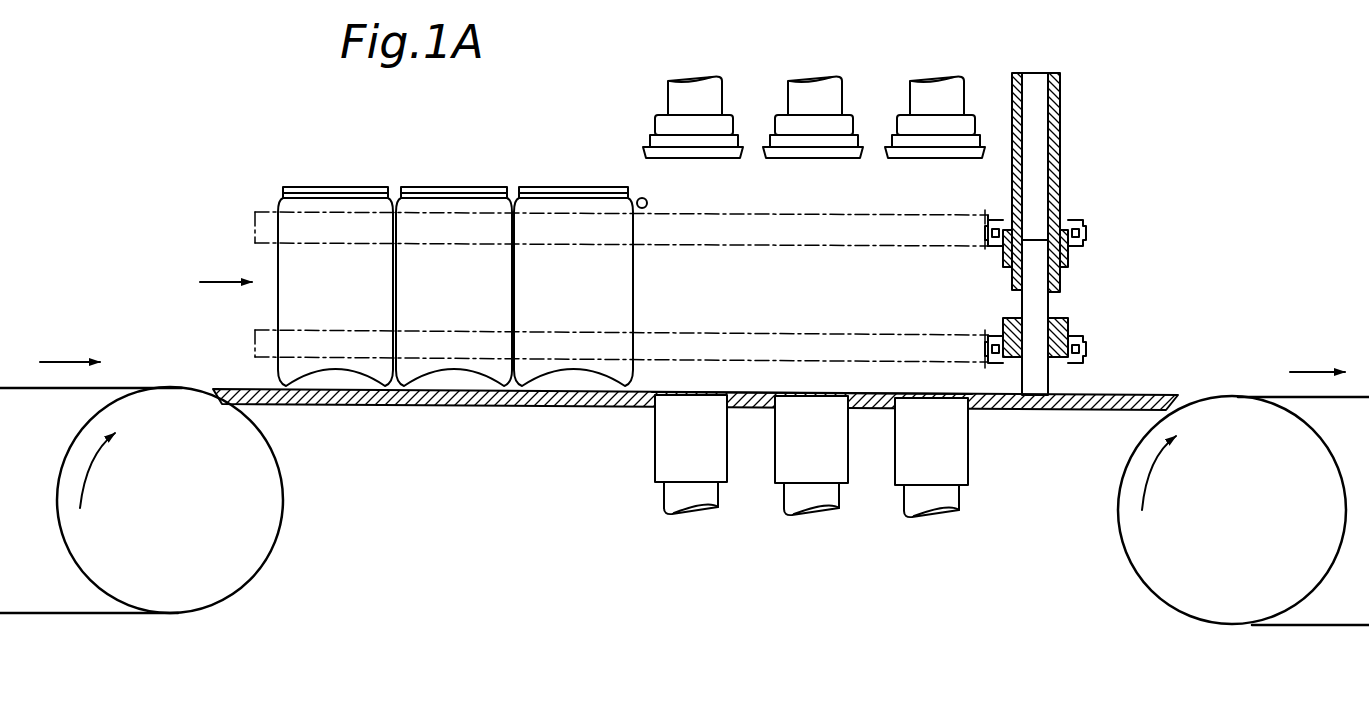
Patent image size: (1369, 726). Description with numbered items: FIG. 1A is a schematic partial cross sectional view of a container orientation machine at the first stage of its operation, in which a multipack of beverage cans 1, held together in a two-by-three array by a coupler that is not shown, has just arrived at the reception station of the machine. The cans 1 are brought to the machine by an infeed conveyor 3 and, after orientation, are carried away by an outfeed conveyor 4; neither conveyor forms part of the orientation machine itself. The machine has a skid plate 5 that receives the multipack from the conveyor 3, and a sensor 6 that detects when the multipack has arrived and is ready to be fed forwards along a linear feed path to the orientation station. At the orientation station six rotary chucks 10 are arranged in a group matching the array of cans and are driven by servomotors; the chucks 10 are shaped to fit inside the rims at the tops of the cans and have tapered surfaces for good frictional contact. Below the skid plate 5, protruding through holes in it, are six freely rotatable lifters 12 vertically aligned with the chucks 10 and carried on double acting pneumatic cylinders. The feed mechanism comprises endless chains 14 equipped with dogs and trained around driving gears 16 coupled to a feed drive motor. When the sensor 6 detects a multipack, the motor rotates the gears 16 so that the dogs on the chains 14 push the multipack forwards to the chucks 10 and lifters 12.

The beverage can 1 is at (443, 265).
The conveyor 3 is at (113, 385).
The conveyor 4 is at (1269, 393).
The skid plate 5 is at (543, 406).
The sensor 6 is at (648, 203).
The rotary chuck 10 is at (658, 125).
The lifter 12 is at (710, 457).
The endless chain 14 is at (846, 232).
The driving gear 16 is at (1069, 257).